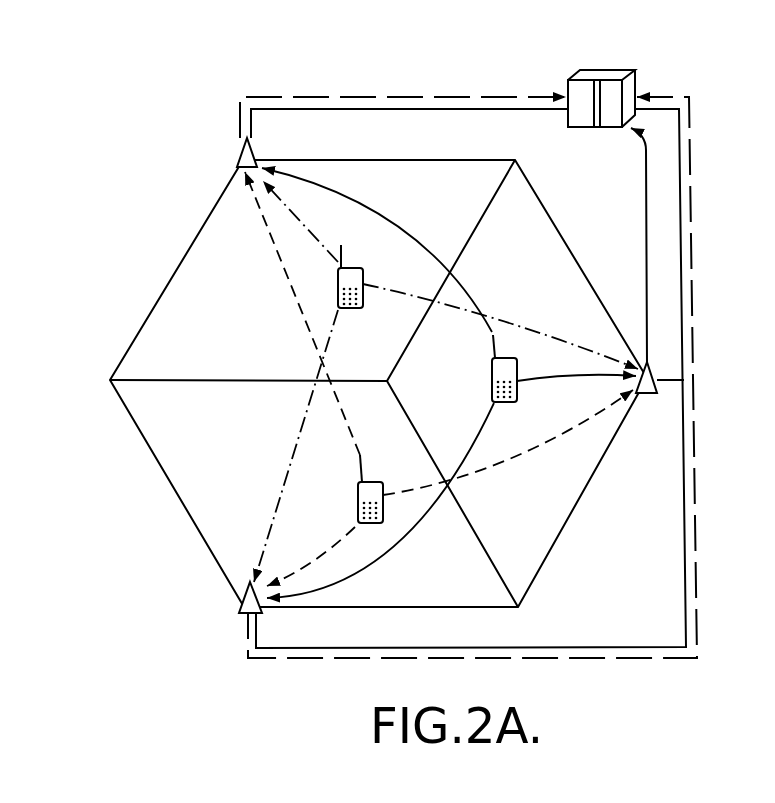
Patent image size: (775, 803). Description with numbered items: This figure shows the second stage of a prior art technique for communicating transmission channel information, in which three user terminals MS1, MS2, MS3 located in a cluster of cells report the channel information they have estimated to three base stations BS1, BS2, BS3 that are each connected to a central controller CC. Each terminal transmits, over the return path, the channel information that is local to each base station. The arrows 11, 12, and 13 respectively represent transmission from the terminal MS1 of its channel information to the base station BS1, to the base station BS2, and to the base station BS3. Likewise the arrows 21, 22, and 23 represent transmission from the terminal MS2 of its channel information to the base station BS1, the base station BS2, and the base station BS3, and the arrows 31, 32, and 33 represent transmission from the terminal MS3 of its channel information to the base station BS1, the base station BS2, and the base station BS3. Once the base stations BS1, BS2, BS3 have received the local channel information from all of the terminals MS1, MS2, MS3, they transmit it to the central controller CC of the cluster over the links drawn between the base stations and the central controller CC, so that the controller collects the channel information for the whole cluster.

The arrow 11 is at (573, 378).
The arrow 12 is at (388, 225).
The arrow 13 is at (390, 547).
The arrow 21 is at (556, 336).
The arrow 22 is at (300, 228).
The arrow 23 is at (295, 447).
The arrow 31 is at (508, 460).
The arrow 32 is at (296, 298).
The arrow 33 is at (336, 546).
The base station BS1 is at (654, 401).
The base station BS2 is at (209, 139).
The base station BS3 is at (222, 607).
The user terminal MS1 is at (476, 368).
The user terminal MS2 is at (371, 294).
The user terminal MS3 is at (339, 489).
The central controller CC is at (607, 196).